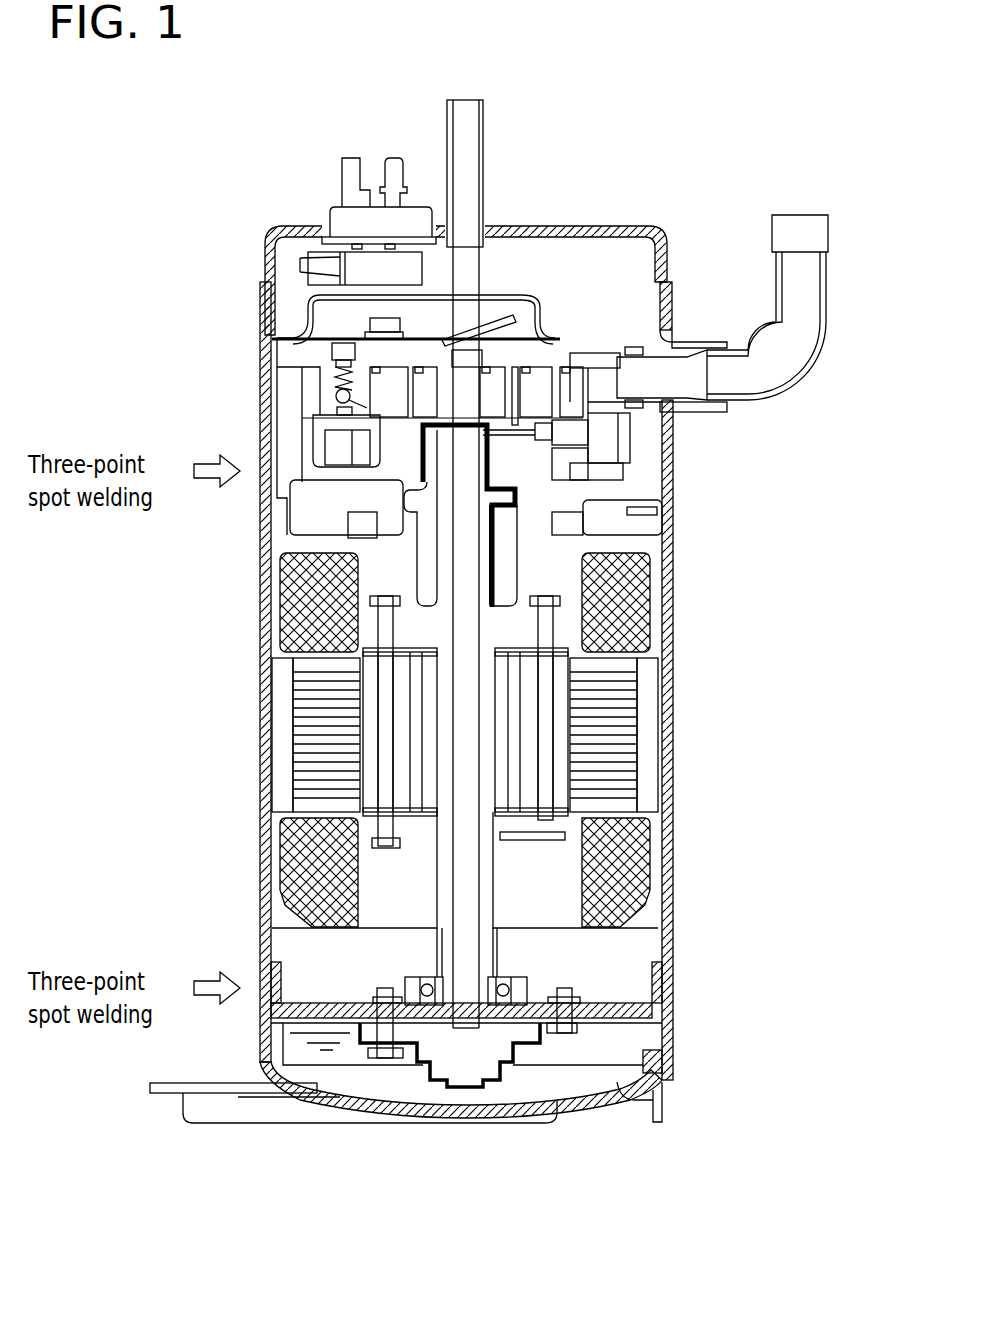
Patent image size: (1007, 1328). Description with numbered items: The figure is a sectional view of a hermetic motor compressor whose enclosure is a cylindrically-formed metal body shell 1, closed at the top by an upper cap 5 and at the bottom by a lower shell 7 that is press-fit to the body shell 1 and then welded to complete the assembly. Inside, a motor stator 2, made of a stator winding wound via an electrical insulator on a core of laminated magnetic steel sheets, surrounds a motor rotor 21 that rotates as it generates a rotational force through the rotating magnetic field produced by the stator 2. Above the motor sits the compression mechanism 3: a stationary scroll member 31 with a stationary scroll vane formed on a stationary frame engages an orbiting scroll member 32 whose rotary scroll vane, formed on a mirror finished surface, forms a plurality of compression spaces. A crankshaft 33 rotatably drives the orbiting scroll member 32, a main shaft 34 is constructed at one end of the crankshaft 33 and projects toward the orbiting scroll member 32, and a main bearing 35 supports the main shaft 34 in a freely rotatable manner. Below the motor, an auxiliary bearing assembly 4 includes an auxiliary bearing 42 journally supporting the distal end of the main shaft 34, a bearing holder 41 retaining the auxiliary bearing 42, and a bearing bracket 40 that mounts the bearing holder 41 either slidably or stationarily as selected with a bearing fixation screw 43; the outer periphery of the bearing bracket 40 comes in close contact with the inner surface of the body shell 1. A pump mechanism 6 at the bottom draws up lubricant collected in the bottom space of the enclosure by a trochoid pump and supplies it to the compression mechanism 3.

The body shell 1 is at (260, 602).
The motor stator 2 is at (622, 708).
The motor rotor 21 is at (368, 695).
The compression mechanism 3 is at (640, 470).
The stationary scroll member 31 is at (386, 358).
The orbiting scroll member 32 is at (383, 425).
The crankshaft 33 is at (441, 470).
The main shaft 34 is at (450, 548).
The main bearing 35 is at (500, 570).
The auxiliary bearing assembly 4 is at (670, 1000).
The bearing bracket 40 is at (660, 962).
The bearing holder 41 is at (525, 997).
The auxiliary bearing 42 is at (424, 989).
The bearing fixation screw 43 is at (575, 1033).
The upper cap 5 is at (617, 226).
The pump mechanism 6 is at (427, 1063).
The lower shell 7 is at (665, 1057).